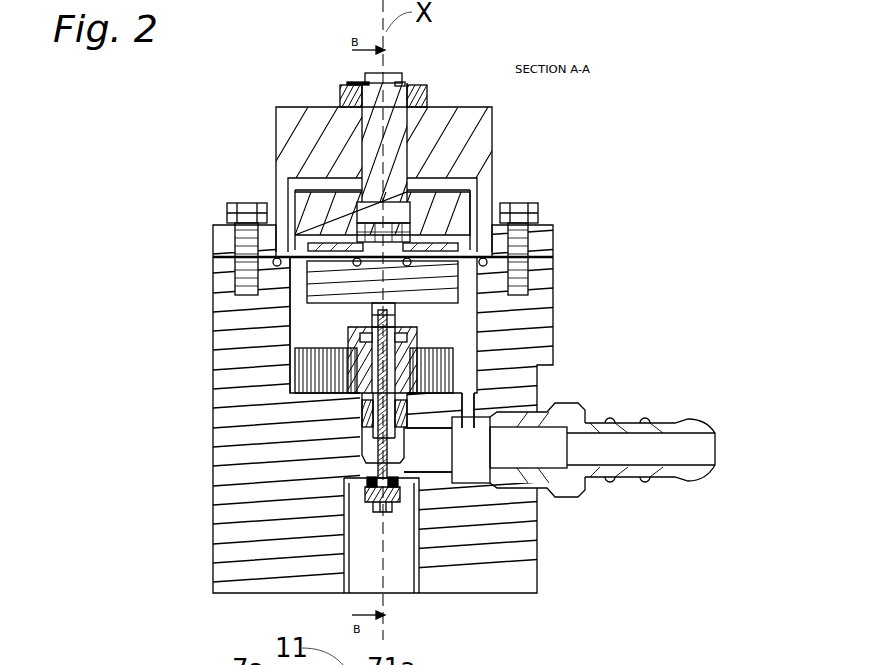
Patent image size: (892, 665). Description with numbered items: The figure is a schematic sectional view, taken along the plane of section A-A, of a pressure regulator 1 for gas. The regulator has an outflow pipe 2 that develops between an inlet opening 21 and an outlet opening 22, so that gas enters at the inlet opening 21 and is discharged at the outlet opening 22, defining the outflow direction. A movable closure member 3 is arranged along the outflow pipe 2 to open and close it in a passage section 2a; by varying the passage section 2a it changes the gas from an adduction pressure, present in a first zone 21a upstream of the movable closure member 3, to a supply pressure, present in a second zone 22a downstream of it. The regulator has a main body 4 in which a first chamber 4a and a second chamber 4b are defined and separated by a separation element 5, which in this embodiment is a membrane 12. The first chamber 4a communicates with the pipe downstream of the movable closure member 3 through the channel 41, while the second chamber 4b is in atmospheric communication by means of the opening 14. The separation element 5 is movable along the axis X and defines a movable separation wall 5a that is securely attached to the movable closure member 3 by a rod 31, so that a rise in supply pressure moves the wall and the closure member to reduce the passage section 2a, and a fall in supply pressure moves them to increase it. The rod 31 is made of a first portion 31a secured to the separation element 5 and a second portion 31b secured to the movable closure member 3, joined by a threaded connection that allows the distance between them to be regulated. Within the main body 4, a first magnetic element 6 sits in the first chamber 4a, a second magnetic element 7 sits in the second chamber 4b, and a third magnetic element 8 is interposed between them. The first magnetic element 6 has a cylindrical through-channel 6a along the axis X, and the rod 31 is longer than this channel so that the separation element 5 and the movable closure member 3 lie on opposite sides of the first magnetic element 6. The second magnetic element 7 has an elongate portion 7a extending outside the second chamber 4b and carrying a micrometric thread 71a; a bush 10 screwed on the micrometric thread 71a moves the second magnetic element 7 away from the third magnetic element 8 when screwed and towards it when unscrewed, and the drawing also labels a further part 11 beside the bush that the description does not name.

The pressure regulator 1 is at (645, 153).
The outflow pipe 2 is at (543, 452).
The passage section 2a is at (372, 487).
The movable closure member 3 is at (405, 490).
The main body 4 is at (211, 253).
The first chamber 4a is at (307, 330).
The second chamber 4b is at (467, 243).
The separation element 5 is at (290, 256).
The movable separation wall 5a is at (307, 262).
The first magnetic element 6 is at (313, 292).
The through-channel 6a is at (455, 400).
The second magnetic element 7 is at (465, 205).
The elongate portion 7a is at (403, 146).
The third magnetic element 8 is at (440, 286).
The bush 10 is at (433, 86).
The lock nut 11 is at (343, 86).
The membrane 12 is at (471, 258).
The opening 14 is at (488, 186).
The inlet opening 21 is at (414, 602).
The first zone 21a is at (398, 550).
The outlet opening 22 is at (729, 445).
The second zone 22a is at (603, 455).
The rod 31 is at (322, 354).
The first portion 31a is at (397, 308).
The second portion 31b is at (455, 430).
The channel 41 is at (470, 410).
The micrometric thread 71a is at (340, 102).